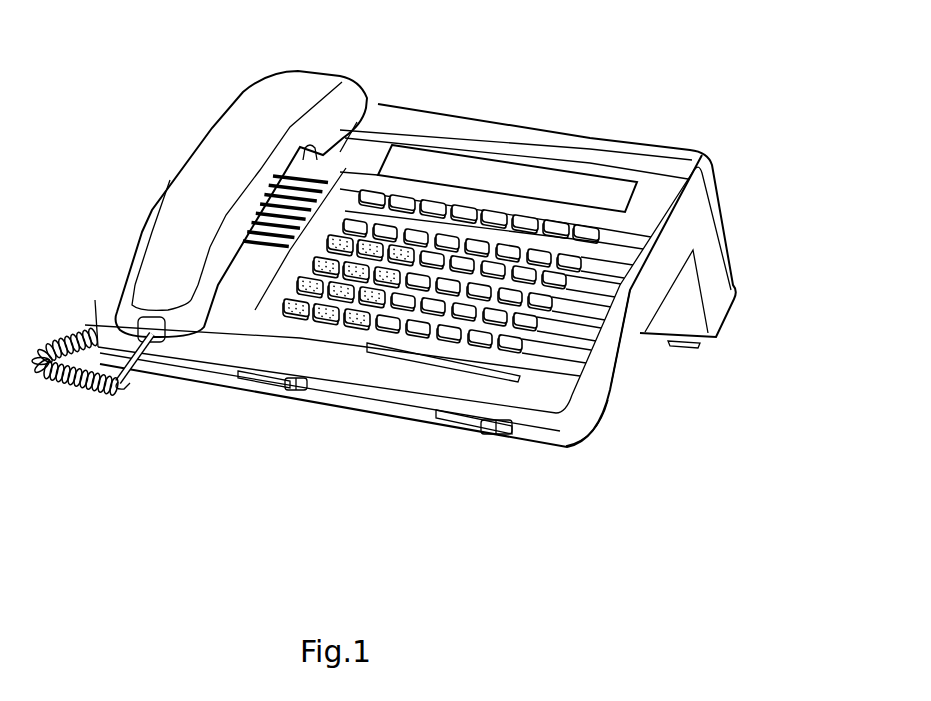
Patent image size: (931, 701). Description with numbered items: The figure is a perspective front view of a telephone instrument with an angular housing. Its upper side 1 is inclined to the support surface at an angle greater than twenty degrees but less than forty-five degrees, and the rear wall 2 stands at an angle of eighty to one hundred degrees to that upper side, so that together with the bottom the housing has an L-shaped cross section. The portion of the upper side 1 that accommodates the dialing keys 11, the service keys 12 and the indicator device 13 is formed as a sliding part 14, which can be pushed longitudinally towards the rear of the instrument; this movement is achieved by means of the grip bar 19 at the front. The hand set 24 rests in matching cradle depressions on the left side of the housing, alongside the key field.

The upper side 1 is at (623, 230).
The rear wall 2 is at (722, 210).
The dialing keys 11 is at (300, 308).
The service keys 12 is at (490, 305).
The indicator device 13 is at (473, 160).
The sliding part 14 is at (613, 278).
The grip bar 19 is at (565, 410).
The hand set 24 is at (260, 112).